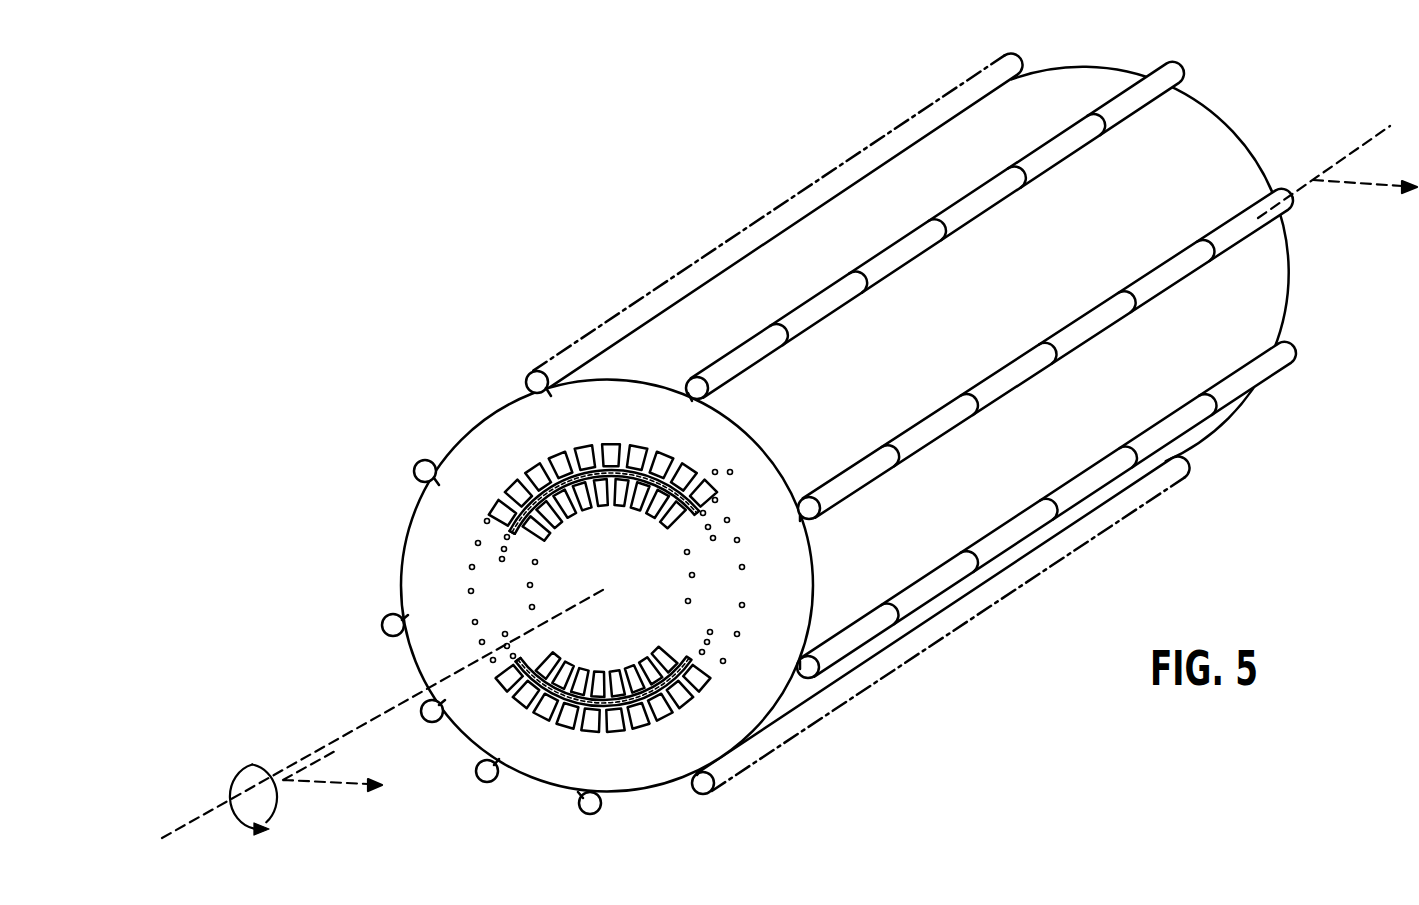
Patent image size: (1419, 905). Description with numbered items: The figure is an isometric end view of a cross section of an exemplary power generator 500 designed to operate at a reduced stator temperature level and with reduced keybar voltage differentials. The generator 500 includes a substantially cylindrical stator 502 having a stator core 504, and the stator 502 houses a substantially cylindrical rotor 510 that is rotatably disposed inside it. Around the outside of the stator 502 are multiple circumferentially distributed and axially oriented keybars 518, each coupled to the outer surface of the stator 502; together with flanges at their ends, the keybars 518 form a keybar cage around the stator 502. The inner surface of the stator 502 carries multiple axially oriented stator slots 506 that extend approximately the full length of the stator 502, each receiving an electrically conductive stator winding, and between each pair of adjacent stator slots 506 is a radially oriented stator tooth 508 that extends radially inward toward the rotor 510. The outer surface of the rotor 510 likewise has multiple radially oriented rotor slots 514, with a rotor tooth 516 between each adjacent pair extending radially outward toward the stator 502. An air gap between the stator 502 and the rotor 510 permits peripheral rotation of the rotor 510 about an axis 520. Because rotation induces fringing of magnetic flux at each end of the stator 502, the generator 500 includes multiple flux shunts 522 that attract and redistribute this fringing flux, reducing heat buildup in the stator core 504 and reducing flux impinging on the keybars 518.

The power generator 500 is at (774, 445).
The stator 502 is at (466, 417).
The stator core 504 is at (507, 422).
The stator slots 506 is at (601, 458).
The stator tooth 508 is at (556, 462).
The rotor 510 is at (556, 588).
The rotor slots 514 is at (598, 505).
The rotor tooth 516 is at (545, 520).
The keybars 518 is at (796, 195).
The axis 520 is at (208, 810).
The flux shunts 522 is at (507, 532).